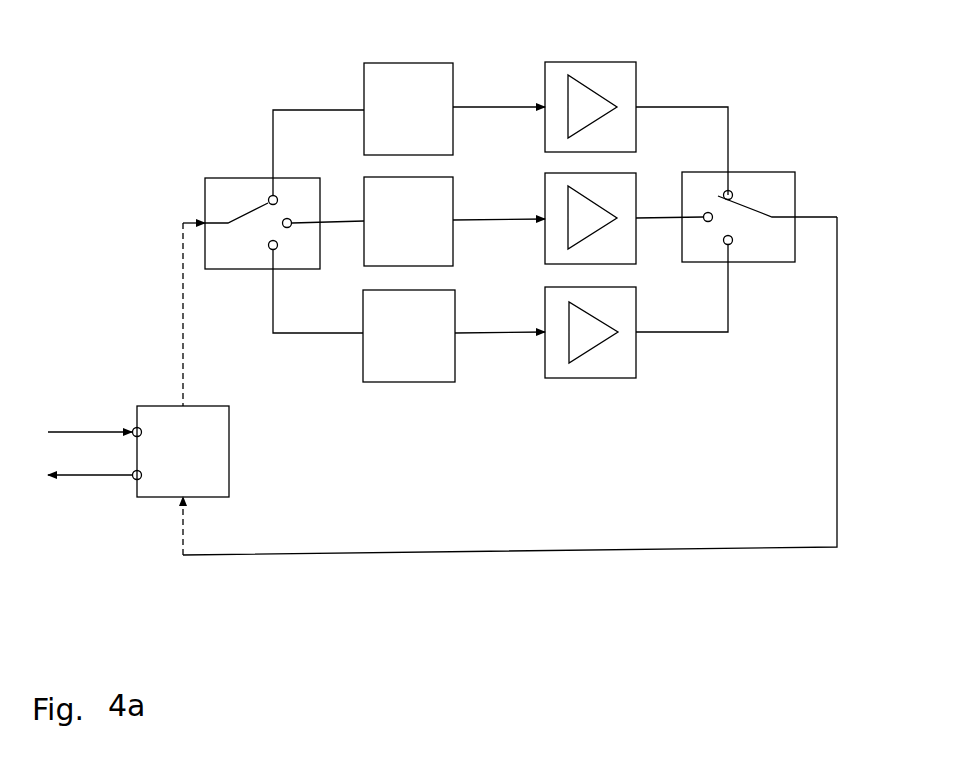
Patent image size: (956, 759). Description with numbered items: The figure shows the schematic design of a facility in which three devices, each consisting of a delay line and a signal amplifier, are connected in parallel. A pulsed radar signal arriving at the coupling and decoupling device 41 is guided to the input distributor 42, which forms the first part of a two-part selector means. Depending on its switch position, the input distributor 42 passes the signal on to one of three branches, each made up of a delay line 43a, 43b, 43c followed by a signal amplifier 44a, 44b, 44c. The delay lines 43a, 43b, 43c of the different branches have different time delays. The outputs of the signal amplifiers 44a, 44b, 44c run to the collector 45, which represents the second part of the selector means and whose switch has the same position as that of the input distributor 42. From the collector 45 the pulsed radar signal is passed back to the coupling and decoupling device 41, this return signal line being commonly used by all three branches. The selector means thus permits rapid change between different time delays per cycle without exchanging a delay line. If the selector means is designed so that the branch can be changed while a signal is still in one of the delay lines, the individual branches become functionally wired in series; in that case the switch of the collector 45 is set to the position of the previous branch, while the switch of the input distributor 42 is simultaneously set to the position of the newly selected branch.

The coupling and decoupling device 41 is at (160, 423).
The input distributor 42 is at (227, 198).
The delay line 43a is at (430, 78).
The delay line 43b is at (448, 197).
The delay line 43c is at (430, 355).
The signal amplifier 44a is at (620, 75).
The signal amplifier 44b is at (620, 195).
The signal amplifier 44c is at (620, 350).
The collector 45 is at (773, 192).